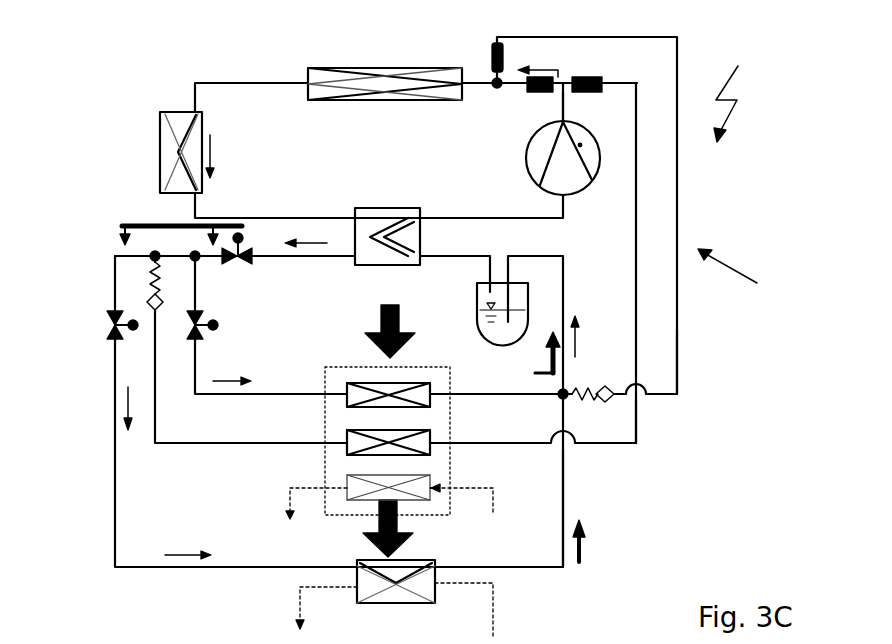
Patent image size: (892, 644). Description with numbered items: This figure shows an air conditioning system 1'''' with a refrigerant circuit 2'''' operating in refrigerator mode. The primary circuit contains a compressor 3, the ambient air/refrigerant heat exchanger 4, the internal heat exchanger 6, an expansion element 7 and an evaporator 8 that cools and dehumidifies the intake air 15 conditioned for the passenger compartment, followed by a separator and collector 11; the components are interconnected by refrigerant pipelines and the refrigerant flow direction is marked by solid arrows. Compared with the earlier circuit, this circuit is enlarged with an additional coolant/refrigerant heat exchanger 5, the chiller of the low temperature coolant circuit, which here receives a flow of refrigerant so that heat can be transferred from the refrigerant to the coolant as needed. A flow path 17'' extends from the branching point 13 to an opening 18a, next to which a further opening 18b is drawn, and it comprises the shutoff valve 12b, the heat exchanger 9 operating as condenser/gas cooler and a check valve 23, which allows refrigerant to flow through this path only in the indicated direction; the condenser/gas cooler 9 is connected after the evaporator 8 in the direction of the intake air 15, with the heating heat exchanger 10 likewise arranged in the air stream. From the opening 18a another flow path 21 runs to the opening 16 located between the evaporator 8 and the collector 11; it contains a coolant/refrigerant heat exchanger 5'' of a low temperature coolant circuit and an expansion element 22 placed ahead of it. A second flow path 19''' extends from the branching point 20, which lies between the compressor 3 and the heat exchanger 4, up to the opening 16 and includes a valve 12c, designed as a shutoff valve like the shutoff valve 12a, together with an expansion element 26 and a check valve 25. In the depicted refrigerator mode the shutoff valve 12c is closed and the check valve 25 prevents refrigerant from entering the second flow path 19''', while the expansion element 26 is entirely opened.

The air conditioning system 1'''' is at (755, 89).
The refrigerant circuit 2'''' is at (754, 282).
The compressor 3 is at (548, 169).
The ambient air/refrigerant heat exchanger 4 is at (349, 62).
The coolant/refrigerant heat exchanger 5 is at (149, 152).
The coolant/refrigerant heat exchanger 5'' is at (394, 599).
The internal heat exchanger 6 is at (402, 211).
The expansion element 7 is at (227, 332).
The evaporator 8 is at (357, 379).
The heat exchanger 9 is at (351, 431).
The heating heat exchanger 10 is at (395, 514).
The separator and collector 11 is at (475, 314).
The shutoff valve 12a is at (506, 108).
The shutoff valve 12b is at (621, 68).
The shutoff valve 12c is at (453, 48).
The branching point 13 is at (519, 138).
The intake air 15 is at (362, 425).
The opening 16 is at (532, 412).
The flow path 17'' is at (682, 434).
The opening 18a is at (102, 289).
The branch point 18b is at (230, 285).
The second flow path 19''' is at (724, 365).
The branching point 20 is at (450, 114).
The flow path 21 is at (602, 508).
The expansion element 22 is at (91, 348).
The check valve 23 is at (172, 323).
The check valve 25 is at (601, 353).
The expansion element 26 is at (252, 205).